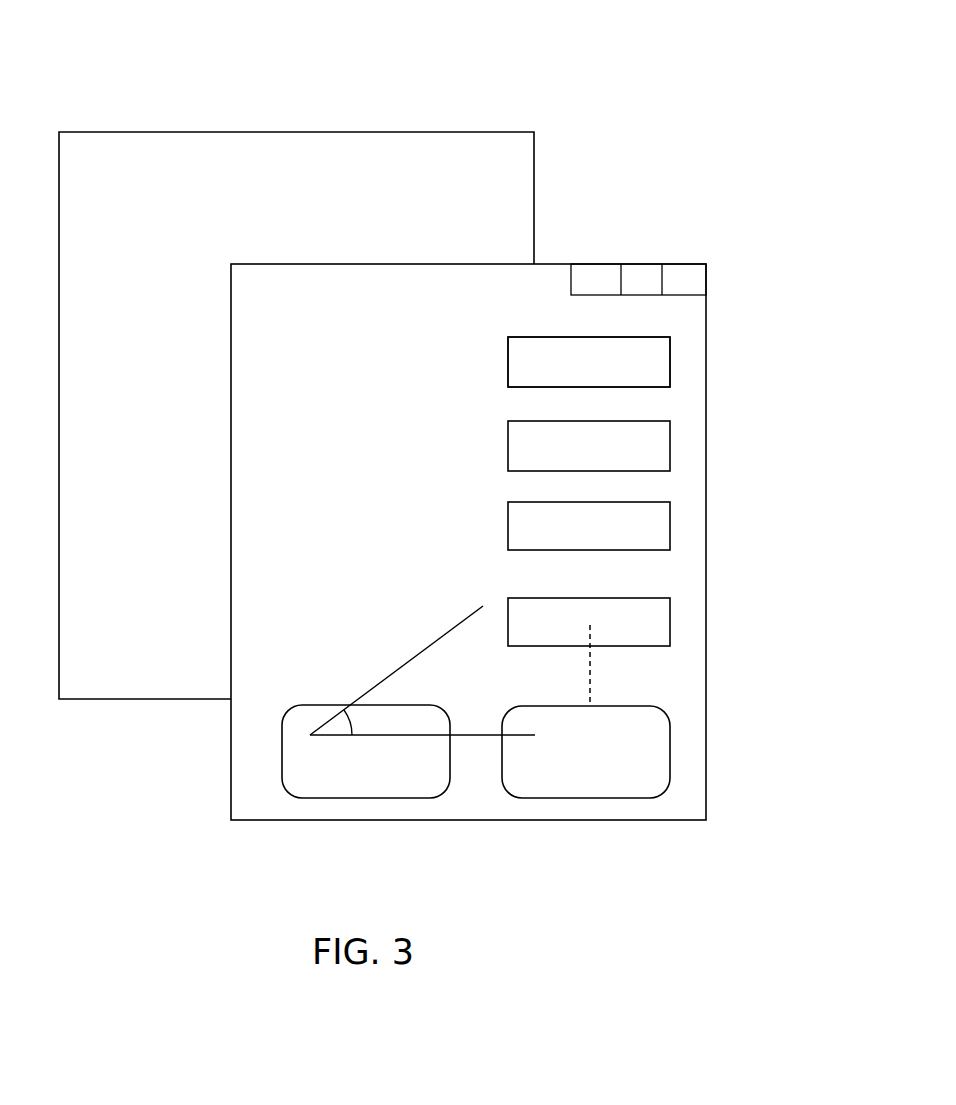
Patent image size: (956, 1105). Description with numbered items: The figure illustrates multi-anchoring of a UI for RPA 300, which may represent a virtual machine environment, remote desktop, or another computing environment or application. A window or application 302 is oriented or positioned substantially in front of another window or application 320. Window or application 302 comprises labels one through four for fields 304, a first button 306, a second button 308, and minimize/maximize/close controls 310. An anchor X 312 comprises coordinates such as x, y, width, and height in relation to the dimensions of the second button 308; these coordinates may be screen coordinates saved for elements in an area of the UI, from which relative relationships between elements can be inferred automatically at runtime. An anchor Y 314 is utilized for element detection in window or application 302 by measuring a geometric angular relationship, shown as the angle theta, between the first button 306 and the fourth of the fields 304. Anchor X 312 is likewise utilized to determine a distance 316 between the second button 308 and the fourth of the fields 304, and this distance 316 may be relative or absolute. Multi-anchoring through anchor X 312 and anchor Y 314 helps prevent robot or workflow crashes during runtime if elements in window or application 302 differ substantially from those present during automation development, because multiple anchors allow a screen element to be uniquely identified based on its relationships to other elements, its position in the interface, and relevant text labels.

The multi-anchoring of a UI for RPA 300 is at (706, 56).
The window or application 320 is at (534, 199).
The minimize/maximize/close controls 310 is at (706, 282).
The window or application 302 is at (672, 347).
The fields 304 is at (678, 353).
The Button 1 306 is at (360, 798).
The Button 2 308 is at (587, 798).
The anchor X 312 is at (600, 728).
The anchor Y 314 is at (290, 729).
The distance 316 is at (592, 667).